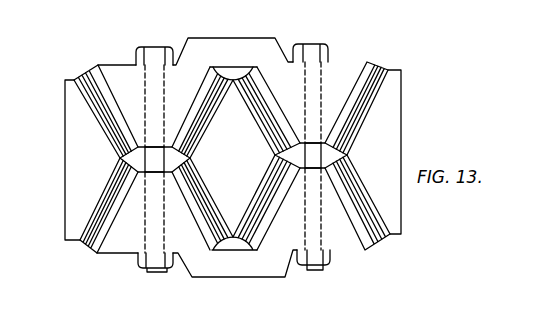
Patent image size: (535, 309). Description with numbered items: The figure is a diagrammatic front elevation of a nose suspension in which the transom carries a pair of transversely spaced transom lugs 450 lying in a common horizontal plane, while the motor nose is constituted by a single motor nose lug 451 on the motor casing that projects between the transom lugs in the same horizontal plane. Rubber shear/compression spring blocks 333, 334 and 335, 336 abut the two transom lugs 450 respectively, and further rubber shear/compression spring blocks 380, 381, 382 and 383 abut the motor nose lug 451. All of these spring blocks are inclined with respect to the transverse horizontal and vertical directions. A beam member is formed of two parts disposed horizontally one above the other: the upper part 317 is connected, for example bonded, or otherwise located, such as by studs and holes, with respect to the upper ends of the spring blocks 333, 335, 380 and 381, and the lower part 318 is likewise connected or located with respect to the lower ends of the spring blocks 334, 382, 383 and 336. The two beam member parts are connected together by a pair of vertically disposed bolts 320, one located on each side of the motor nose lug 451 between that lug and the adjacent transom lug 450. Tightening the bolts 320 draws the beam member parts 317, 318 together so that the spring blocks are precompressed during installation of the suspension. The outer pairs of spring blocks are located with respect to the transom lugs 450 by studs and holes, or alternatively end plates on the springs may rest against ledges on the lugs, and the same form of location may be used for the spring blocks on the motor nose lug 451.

The upper part of beam member 317 is at (331, 78).
The lower part of beam member 318 is at (279, 235).
The bolt 320 is at (143, 95).
The rubber shear/compression spring block 333 is at (89, 70).
The rubber shear/compression spring block 334 is at (90, 247).
The rubber shear/compression spring block 335 is at (375, 69).
The rubber shear/compression spring block 336 is at (378, 242).
The rubber shear/compression spring block 380 is at (197, 76).
The rubber shear/compression spring block 381 is at (268, 64).
The rubber shear/compression spring block 382 is at (202, 223).
The rubber shear/compression spring block 383 is at (248, 238).
The transom lug 450 is at (75, 172).
The motor nose lug 451 is at (232, 98).